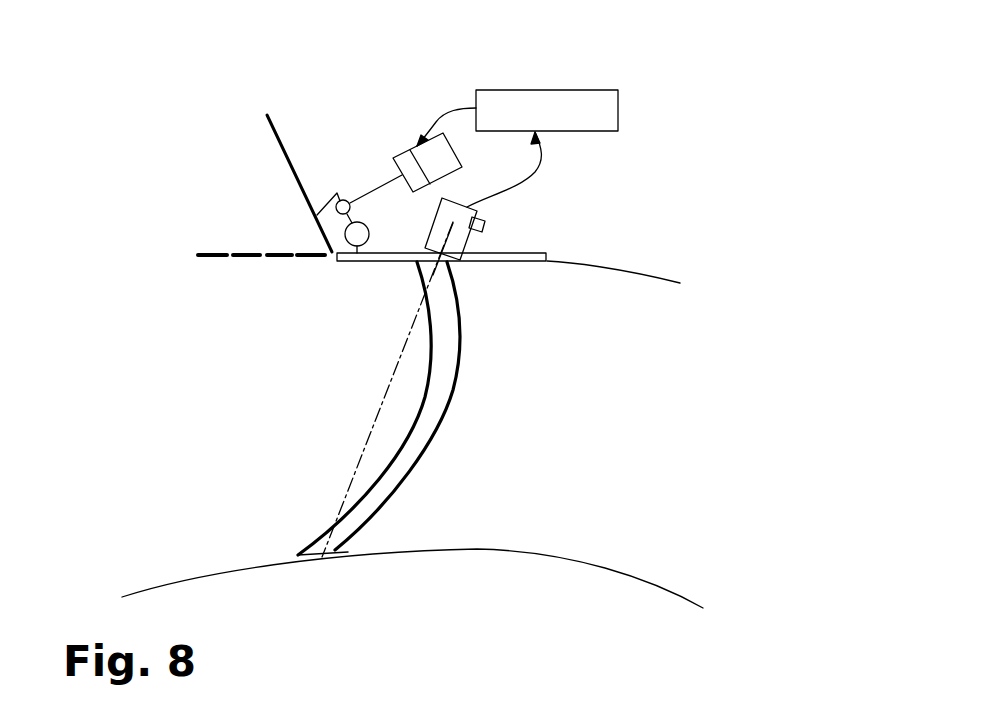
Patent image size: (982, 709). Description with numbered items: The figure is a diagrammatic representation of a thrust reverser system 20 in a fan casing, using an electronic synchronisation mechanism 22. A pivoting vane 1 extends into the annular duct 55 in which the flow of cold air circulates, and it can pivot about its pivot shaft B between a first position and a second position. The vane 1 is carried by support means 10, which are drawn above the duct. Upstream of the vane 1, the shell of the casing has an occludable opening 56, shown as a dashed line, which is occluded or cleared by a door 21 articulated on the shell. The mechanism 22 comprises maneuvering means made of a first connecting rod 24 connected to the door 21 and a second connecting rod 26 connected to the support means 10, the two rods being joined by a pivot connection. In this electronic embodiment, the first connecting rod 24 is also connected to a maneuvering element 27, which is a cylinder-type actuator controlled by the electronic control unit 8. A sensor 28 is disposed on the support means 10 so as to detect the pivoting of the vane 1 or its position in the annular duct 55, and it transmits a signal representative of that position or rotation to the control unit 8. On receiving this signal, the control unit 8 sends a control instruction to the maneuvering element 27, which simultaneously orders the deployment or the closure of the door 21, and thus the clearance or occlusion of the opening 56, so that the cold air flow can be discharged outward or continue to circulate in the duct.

The vane 1 is at (440, 368).
The electronic control unit 8 is at (517, 148).
The support means 10 is at (468, 247).
The thrust reverser system 20 is at (578, 67).
The door 21 is at (276, 126).
The synchronisation mechanism 22 is at (572, 167).
The first connecting rod 24 is at (328, 197).
The second connecting rod 26 is at (350, 199).
The maneuvering element 27 is at (398, 156).
The sensor 28 is at (483, 223).
The annular duct 55 is at (523, 453).
The opening 56 is at (248, 259).
The pivot shaft B is at (380, 403).